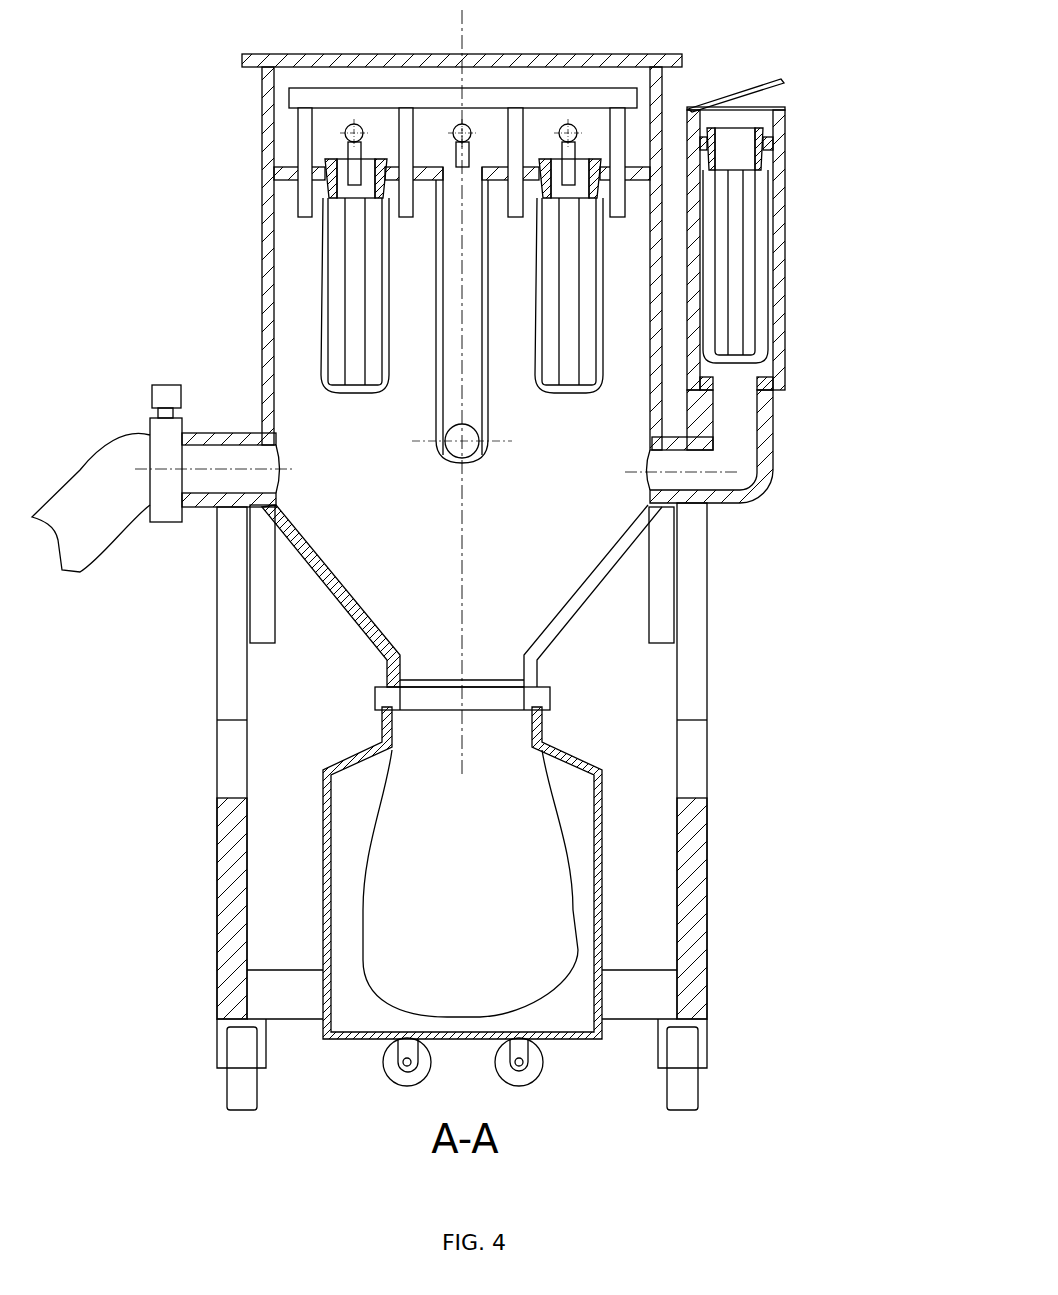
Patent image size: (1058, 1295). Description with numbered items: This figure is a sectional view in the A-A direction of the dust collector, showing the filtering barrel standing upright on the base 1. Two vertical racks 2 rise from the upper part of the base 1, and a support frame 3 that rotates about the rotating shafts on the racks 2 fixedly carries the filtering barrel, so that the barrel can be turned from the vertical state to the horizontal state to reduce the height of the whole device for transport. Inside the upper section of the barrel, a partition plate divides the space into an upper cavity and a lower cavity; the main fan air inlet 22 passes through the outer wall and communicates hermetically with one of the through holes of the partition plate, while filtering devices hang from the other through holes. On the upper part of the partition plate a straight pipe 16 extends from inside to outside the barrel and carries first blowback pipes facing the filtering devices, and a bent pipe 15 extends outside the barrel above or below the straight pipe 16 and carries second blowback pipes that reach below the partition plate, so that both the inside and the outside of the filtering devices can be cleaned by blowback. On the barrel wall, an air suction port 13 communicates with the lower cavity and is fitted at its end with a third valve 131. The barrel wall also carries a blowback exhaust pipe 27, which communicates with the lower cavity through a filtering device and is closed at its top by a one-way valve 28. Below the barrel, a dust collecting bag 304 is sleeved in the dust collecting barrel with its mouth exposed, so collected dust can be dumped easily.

The base 1 is at (282, 990).
The rack 2 is at (232, 684).
The support frame 3 is at (263, 562).
The air suction port 13 is at (213, 438).
The third valve 131 is at (165, 442).
The bent pipe 15 is at (297, 98).
The straight pipe 16 is at (354, 133).
The main fan air inlet 22 is at (447, 455).
The blowback exhaust pipe 27 is at (780, 290).
The one-way valve 28 is at (766, 87).
The dust collecting bag 304 is at (508, 835).